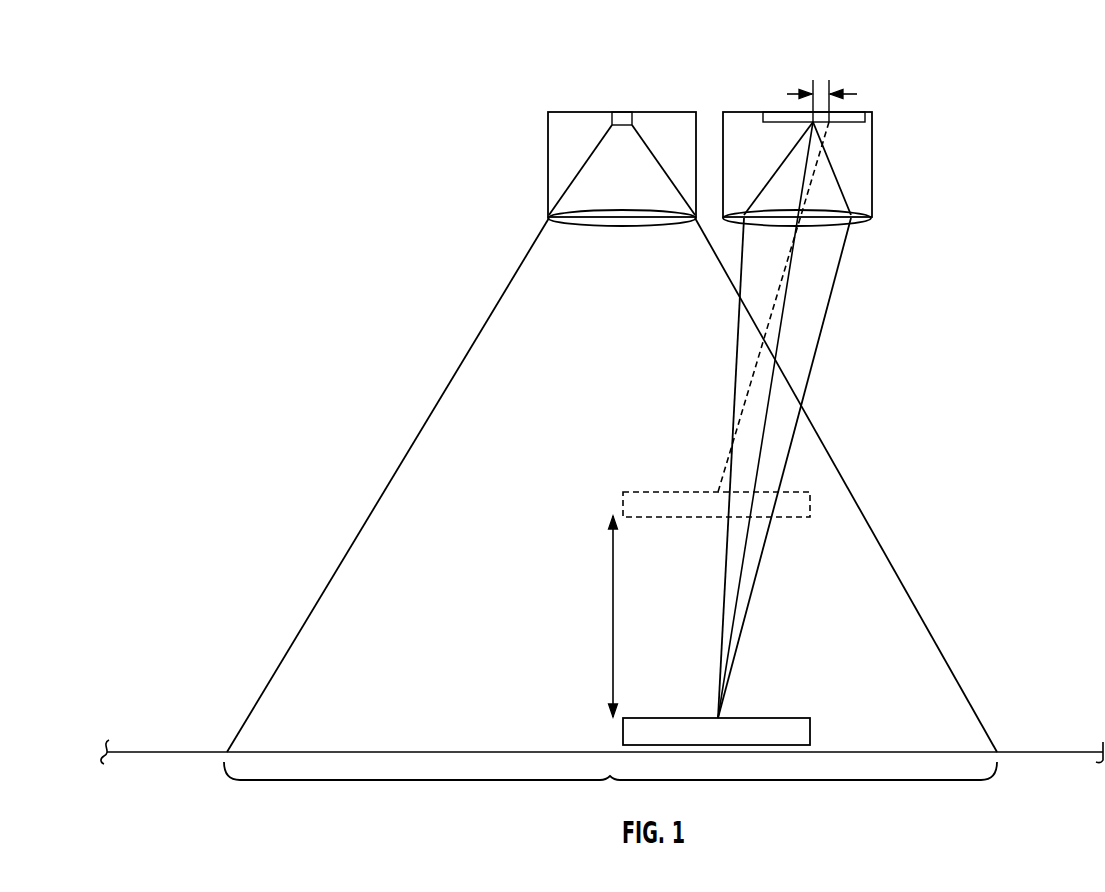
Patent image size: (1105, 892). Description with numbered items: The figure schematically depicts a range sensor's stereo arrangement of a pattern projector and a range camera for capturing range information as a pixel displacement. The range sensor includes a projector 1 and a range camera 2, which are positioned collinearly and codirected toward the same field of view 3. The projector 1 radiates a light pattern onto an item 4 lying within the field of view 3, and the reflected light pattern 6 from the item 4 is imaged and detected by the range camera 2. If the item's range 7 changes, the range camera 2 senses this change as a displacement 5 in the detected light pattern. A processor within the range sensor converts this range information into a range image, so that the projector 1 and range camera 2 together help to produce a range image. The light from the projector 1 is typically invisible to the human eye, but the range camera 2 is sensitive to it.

The projector 1 is at (545, 163).
The range camera 2 is at (874, 163).
The field of view 3 is at (484, 297).
The item 4 is at (814, 730).
The displacement 5 is at (822, 68).
The reflected light pattern 6 is at (836, 294).
The range 7 is at (602, 587).